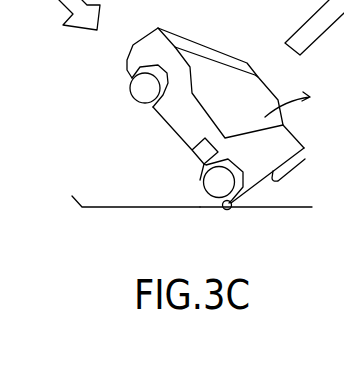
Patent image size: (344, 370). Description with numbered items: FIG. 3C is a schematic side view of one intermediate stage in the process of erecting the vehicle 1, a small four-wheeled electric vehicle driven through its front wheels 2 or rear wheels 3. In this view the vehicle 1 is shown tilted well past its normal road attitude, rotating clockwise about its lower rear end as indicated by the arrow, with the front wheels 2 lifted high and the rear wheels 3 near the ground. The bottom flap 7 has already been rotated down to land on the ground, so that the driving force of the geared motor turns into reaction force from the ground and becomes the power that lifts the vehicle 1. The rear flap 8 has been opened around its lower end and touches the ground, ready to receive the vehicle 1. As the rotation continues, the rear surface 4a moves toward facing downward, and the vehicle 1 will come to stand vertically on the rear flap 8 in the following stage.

The vehicle 1 is at (237, 52).
The front wheels 2 is at (143, 91).
The rear wheels 3 is at (219, 186).
The rear surface 4a is at (305, 159).
The bottom flap 7 is at (118, 207).
The rear flap 8 is at (289, 208).